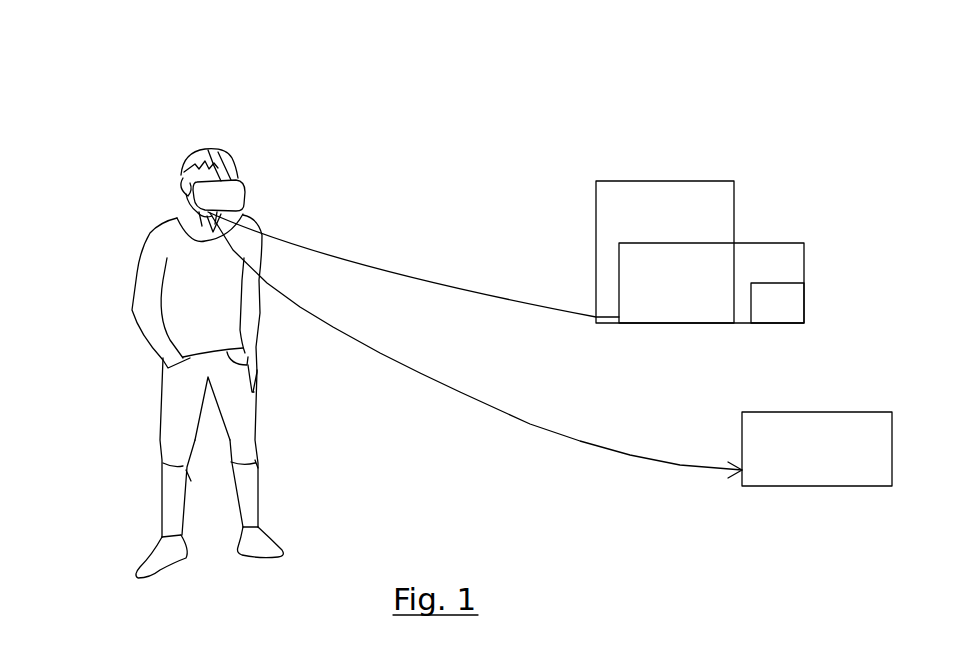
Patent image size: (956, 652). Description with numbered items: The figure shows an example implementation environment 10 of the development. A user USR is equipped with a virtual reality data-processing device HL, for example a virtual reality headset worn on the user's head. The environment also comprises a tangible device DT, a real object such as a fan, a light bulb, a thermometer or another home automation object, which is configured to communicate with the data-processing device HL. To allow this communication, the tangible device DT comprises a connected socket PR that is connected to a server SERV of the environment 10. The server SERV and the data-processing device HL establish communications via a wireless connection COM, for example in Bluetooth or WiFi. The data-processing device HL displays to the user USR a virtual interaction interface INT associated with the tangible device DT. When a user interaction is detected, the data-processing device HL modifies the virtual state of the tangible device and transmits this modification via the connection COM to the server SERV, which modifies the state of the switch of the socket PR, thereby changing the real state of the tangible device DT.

The implementation environment 10 is at (126, 127).
The user USR is at (183, 290).
The virtual reality data-processing device HL is at (228, 193).
The virtual interaction interface INT is at (637, 208).
The tangible device DT is at (711, 283).
The connected socket PR is at (777, 303).
The connection COM is at (476, 345).
The server SERV is at (817, 449).